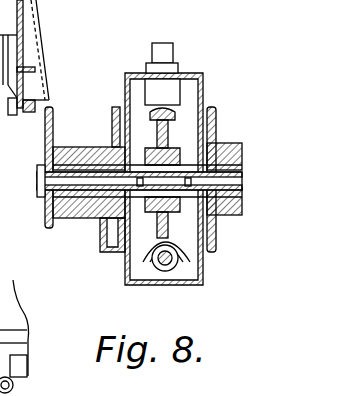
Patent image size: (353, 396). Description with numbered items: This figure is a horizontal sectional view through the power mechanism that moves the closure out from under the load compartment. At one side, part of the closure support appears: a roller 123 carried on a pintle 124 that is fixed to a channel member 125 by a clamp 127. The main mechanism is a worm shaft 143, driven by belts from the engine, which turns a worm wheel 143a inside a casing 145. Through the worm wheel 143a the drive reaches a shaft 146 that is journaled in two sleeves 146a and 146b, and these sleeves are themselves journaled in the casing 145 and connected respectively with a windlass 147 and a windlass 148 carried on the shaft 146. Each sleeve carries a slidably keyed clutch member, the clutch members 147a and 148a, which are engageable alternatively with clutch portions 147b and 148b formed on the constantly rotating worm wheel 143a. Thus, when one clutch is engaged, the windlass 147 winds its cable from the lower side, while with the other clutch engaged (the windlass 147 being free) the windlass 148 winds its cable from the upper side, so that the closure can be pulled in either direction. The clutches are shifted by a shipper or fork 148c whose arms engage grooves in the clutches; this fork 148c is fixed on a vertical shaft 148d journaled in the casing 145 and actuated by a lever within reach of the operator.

The roller 123 is at (26, 126).
The pintle 124 is at (15, 121).
The channel member 125 is at (23, 73).
The clamp 127 is at (37, 110).
The worm shaft 143 is at (170, 46).
The worm wheel 143a is at (178, 116).
The casing 145 is at (203, 84).
The shaft 146 is at (50, 181).
The sleeve 146a is at (242, 173).
The sleeve 146b is at (45, 193).
The windlass 147 is at (232, 143).
The clutch member 147a is at (209, 109).
The clutch portion 147b is at (178, 257).
The windlass 148 is at (52, 229).
The clutch member 148a is at (118, 135).
The clutch portion 148b is at (148, 255).
The shipper 148c is at (133, 270).
The vertical shaft 148d is at (160, 265).